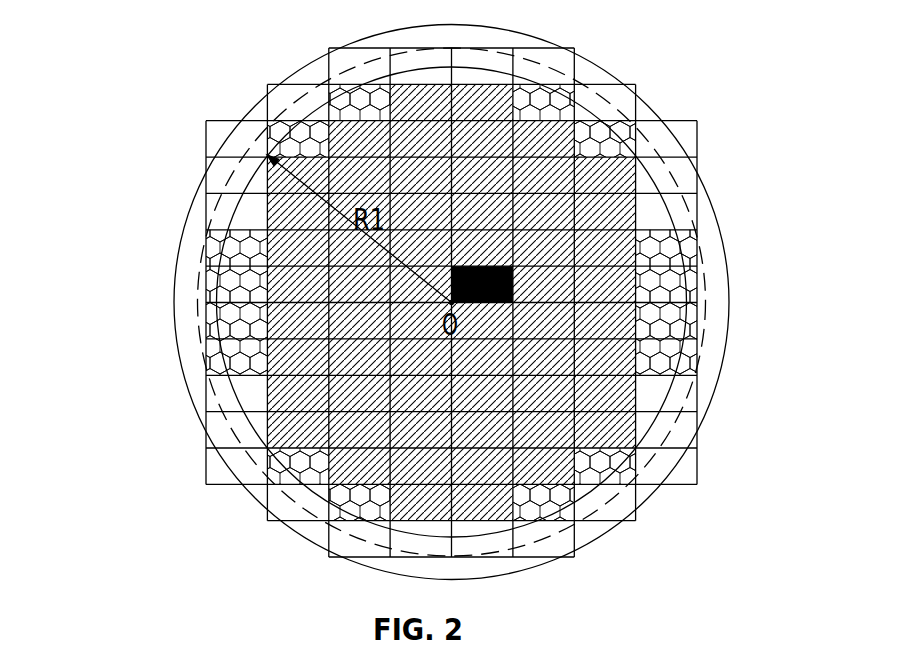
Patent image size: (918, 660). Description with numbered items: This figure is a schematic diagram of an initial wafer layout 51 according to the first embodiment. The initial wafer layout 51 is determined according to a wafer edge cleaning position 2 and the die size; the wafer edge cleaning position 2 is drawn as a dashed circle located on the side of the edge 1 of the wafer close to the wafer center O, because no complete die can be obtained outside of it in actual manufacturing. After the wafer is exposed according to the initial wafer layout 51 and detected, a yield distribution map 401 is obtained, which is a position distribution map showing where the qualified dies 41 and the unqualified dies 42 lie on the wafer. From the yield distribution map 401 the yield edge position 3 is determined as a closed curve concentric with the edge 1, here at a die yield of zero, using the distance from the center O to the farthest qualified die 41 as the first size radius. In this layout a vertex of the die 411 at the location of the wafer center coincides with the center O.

The edge of the wafer 1 is at (728, 283).
The wafer edge cleaning position 2 is at (705, 332).
The yield edge position 3 is at (665, 402).
The yield distribution map 401 is at (84, 208).
The qualified dies 41 is at (297, 212).
The unqualified dies 42 is at (222, 238).
The die at the location of the center of the wafer 411 is at (446, 290).
The initial wafer layout 51 is at (217, 133).